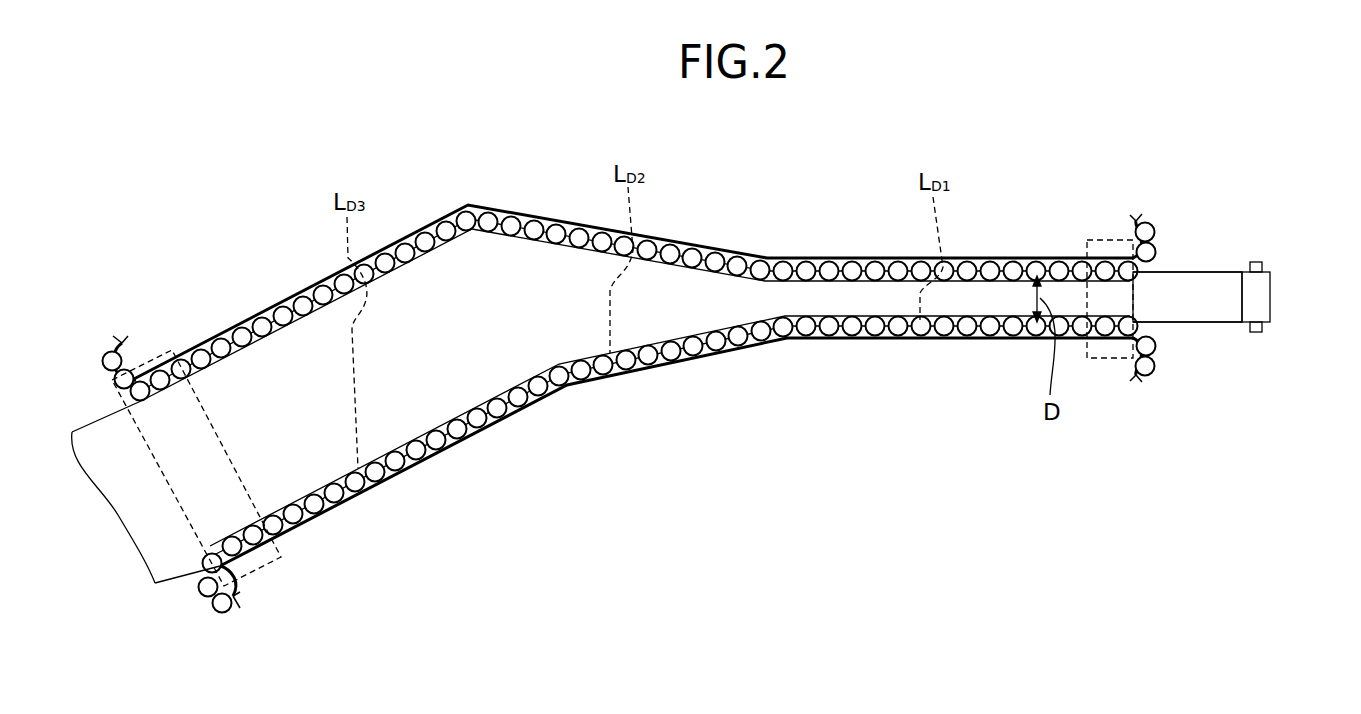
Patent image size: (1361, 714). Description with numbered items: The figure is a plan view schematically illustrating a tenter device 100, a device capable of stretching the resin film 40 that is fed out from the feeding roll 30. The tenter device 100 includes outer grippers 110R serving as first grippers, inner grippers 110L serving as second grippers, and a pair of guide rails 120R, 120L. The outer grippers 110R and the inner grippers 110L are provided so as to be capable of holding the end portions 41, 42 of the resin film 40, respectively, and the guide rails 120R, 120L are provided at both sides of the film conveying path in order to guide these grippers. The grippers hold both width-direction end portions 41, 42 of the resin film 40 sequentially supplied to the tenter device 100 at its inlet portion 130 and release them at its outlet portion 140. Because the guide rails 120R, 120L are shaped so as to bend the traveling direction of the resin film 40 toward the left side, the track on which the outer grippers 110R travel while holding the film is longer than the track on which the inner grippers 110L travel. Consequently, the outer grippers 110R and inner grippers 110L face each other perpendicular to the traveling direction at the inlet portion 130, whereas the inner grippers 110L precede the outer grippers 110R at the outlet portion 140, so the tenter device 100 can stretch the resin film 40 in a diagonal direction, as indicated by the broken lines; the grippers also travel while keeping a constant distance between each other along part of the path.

The feeding roll 30 is at (1270, 297).
The resin film 40 is at (1187, 302).
The end portion of the resin film 41 is at (1175, 277).
The end portion of the resin film 42 is at (1203, 317).
The tenter device 100 is at (1062, 148).
The outer grippers 110R is at (850, 258).
The inner grippers 110L is at (875, 332).
The guide rail 120R is at (983, 262).
The guide rail 120L is at (982, 338).
The inlet portion 130 is at (1113, 362).
The outlet portion 140 is at (267, 563).